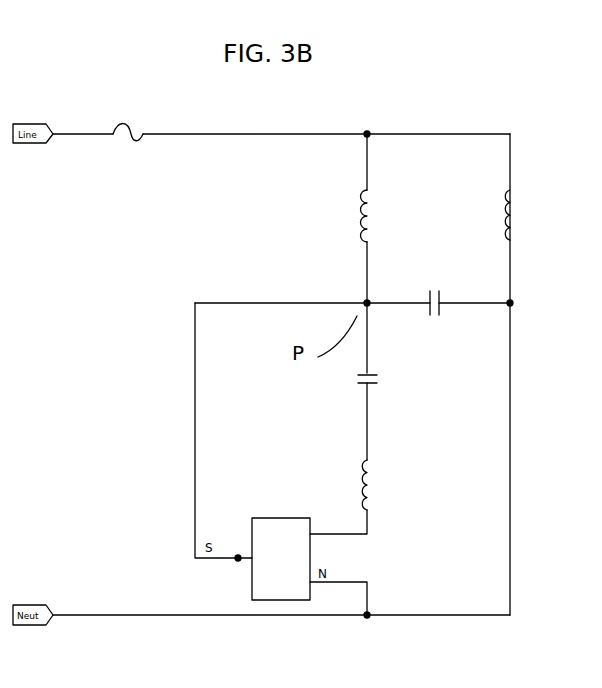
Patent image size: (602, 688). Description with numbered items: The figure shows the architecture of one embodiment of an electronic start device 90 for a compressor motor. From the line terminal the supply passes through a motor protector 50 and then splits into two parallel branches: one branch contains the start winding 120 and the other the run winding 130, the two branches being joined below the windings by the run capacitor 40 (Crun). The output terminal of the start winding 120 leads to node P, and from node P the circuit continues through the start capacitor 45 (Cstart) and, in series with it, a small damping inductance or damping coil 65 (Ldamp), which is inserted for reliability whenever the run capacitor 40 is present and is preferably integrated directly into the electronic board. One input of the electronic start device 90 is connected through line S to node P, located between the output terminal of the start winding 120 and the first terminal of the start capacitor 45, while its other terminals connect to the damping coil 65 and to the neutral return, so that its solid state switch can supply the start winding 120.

The motor protector 50 is at (133, 124).
The start winding 120 is at (336, 211).
The run winding 130 is at (514, 214).
The run capacitor 40 is at (437, 320).
The start capacitor 45 is at (357, 393).
The damping coil 65 is at (350, 483).
The electronic start device 90 is at (240, 574).